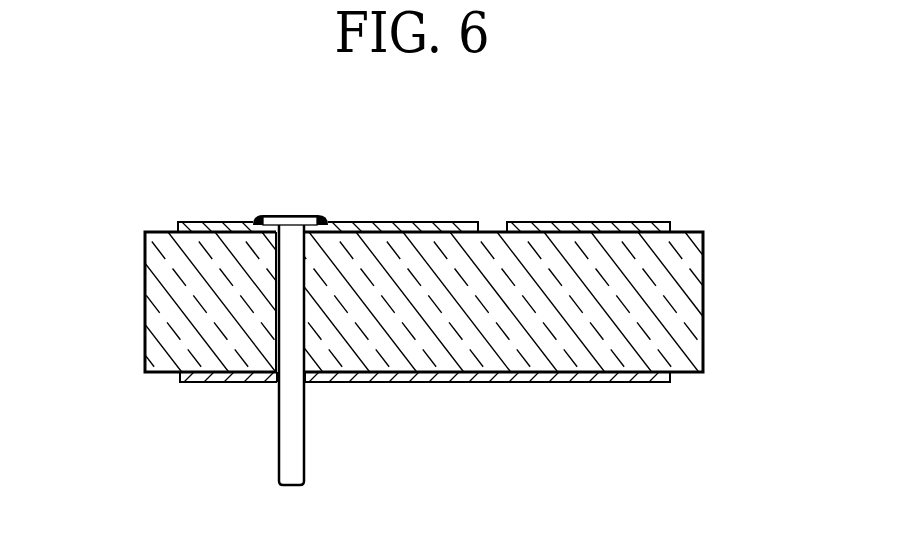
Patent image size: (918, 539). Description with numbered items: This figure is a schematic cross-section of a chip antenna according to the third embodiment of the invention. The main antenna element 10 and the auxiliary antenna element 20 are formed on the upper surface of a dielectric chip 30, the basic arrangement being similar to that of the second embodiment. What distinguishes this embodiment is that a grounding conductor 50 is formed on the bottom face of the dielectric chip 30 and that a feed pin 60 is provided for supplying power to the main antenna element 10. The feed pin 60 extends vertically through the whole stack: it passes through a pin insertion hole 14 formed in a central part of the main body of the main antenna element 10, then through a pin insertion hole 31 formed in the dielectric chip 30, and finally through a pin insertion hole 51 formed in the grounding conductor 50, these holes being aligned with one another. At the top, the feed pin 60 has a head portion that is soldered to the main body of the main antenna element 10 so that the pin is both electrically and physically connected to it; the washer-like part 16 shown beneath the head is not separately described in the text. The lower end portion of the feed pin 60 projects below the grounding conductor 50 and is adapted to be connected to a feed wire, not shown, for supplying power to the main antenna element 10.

The main antenna element 10 is at (447, 226).
The auxiliary antenna element 20 is at (603, 230).
The dielectric chip 30 is at (667, 292).
The pin insertion hole 31 is at (284, 300).
The pin insertion hole 14 is at (273, 224).
The washer 16 is at (297, 220).
The grounding conductor 50 is at (558, 385).
The pin insertion hole 51 is at (303, 392).
The feed pin 60 is at (290, 433).